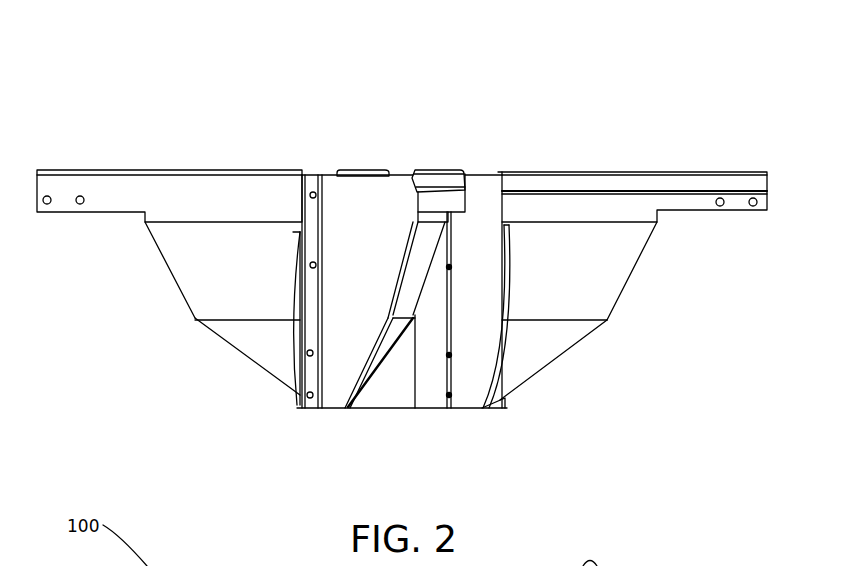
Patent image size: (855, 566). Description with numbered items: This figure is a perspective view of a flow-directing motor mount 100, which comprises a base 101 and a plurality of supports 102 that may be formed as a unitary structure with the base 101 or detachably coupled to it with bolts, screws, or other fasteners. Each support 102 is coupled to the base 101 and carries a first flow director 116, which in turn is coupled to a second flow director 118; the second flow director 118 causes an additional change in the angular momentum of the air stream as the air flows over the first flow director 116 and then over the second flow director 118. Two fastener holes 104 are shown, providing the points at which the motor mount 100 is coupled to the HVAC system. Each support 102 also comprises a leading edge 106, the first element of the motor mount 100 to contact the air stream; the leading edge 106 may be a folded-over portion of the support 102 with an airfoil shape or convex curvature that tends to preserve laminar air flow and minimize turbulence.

The flow-directing motor mount 100 is at (195, 72).
The base 101 is at (335, 333).
The support 102 is at (123, 200).
The fastener hole 104 is at (312, 400).
The leading edge 106 is at (90, 173).
The first flow director 116 is at (203, 290).
The second flow director 118 is at (263, 357).